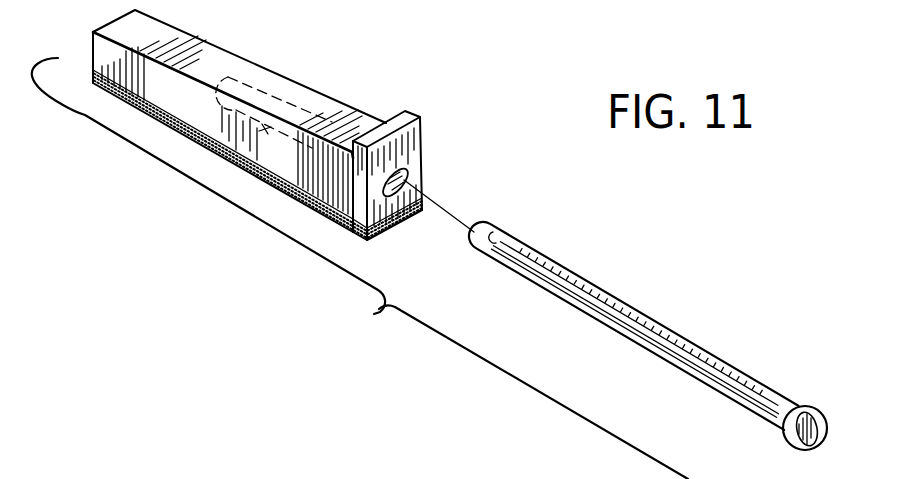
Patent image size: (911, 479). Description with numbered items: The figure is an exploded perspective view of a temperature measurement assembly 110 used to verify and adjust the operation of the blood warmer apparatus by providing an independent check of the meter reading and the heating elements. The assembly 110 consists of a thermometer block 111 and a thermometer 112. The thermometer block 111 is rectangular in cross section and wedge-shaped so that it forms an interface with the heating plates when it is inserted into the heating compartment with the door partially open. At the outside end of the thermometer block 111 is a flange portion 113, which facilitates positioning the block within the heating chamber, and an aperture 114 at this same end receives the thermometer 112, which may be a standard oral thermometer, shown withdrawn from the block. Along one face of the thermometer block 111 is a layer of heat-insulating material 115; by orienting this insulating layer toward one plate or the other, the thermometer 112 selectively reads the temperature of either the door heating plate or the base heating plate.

The temperature measurement assembly 110 is at (360, 268).
The thermometer block 111 is at (292, 80).
The thermometer 112 is at (703, 352).
The flange portion 113 is at (412, 113).
The aperture 114 is at (424, 176).
The layer of heat-insulating material 115 is at (329, 220).